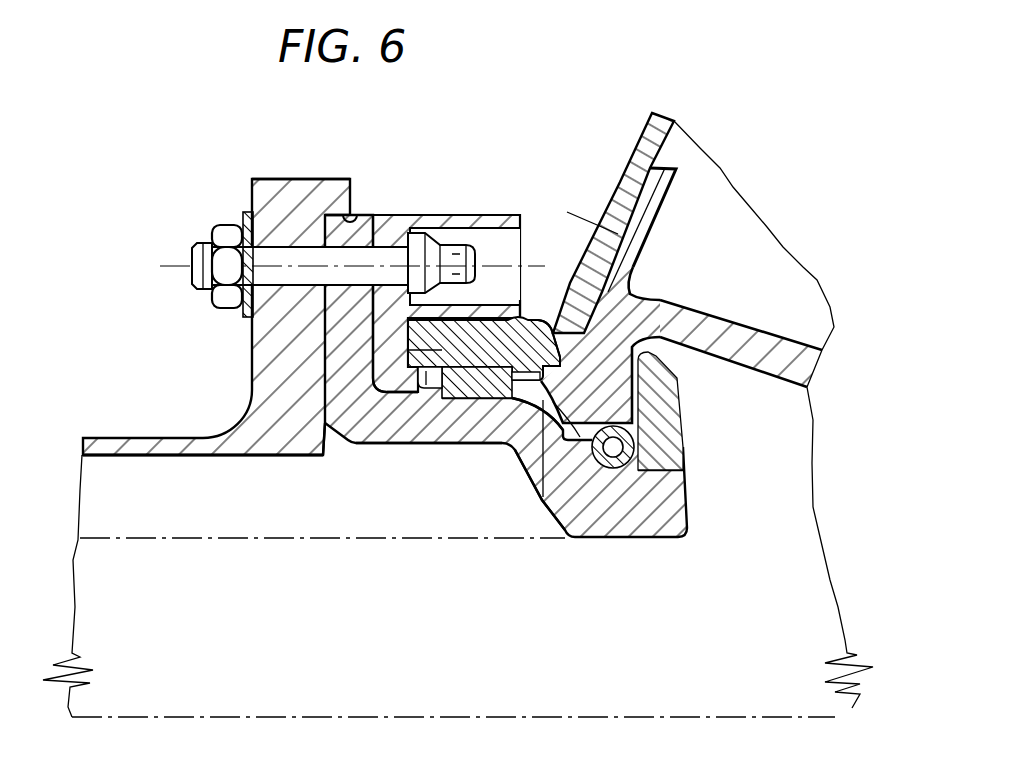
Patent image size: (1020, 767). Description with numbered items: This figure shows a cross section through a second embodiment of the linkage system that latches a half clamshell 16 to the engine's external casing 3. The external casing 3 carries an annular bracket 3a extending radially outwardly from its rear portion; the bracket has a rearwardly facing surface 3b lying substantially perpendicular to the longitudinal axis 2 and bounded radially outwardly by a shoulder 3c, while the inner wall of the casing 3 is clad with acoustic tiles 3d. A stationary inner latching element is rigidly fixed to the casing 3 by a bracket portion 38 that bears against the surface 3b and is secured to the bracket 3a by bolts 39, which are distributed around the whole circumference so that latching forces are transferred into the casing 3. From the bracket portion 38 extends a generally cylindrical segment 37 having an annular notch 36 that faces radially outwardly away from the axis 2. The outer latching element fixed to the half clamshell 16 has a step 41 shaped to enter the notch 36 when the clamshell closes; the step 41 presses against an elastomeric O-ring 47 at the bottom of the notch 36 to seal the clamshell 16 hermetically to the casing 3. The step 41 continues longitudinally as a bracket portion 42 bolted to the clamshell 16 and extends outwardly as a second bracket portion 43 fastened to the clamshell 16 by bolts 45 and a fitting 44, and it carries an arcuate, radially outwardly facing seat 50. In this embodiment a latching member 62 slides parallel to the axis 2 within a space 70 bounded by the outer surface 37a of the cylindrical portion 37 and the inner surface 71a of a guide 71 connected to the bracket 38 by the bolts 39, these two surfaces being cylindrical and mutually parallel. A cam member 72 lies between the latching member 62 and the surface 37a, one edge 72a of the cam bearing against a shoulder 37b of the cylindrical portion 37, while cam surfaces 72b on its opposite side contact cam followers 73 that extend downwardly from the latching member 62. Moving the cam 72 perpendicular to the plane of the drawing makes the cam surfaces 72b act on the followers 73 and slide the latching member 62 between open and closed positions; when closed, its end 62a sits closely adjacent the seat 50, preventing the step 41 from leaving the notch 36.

The longitudinal axis 2 is at (328, 715).
The external casing 3 is at (143, 447).
The annular bracket 3a is at (258, 193).
The rearwardly facing surface 3b is at (325, 452).
The shoulder 3c is at (352, 217).
The acoustic tiles 3d is at (228, 522).
The half clamshells 16 is at (780, 206).
The annular notch 36 is at (586, 433).
The cylindrical segment 37 is at (492, 440).
The outer surface 37a is at (433, 402).
The shoulder 37b is at (543, 495).
The bracket portion 38 is at (356, 390).
The bolts 39 is at (203, 258).
The step 41 is at (630, 308).
The bracket portion 42 is at (757, 332).
The second bracket portion 43 is at (655, 205).
The fitting 44 is at (660, 133).
The bolts 45 is at (670, 257).
The elastomeric O-ring 47 is at (615, 450).
The seat 50 is at (676, 380).
The latching member 62 is at (423, 336).
The end of the latching member 62a is at (557, 330).
The space 70 is at (408, 394).
The guide 71 is at (398, 228).
The inner surface 71a is at (540, 320).
The cam member 72 is at (477, 382).
The edge of the cam member 72a is at (560, 378).
The cam surfaces 72b is at (432, 363).
The cam followers 73 is at (420, 376).